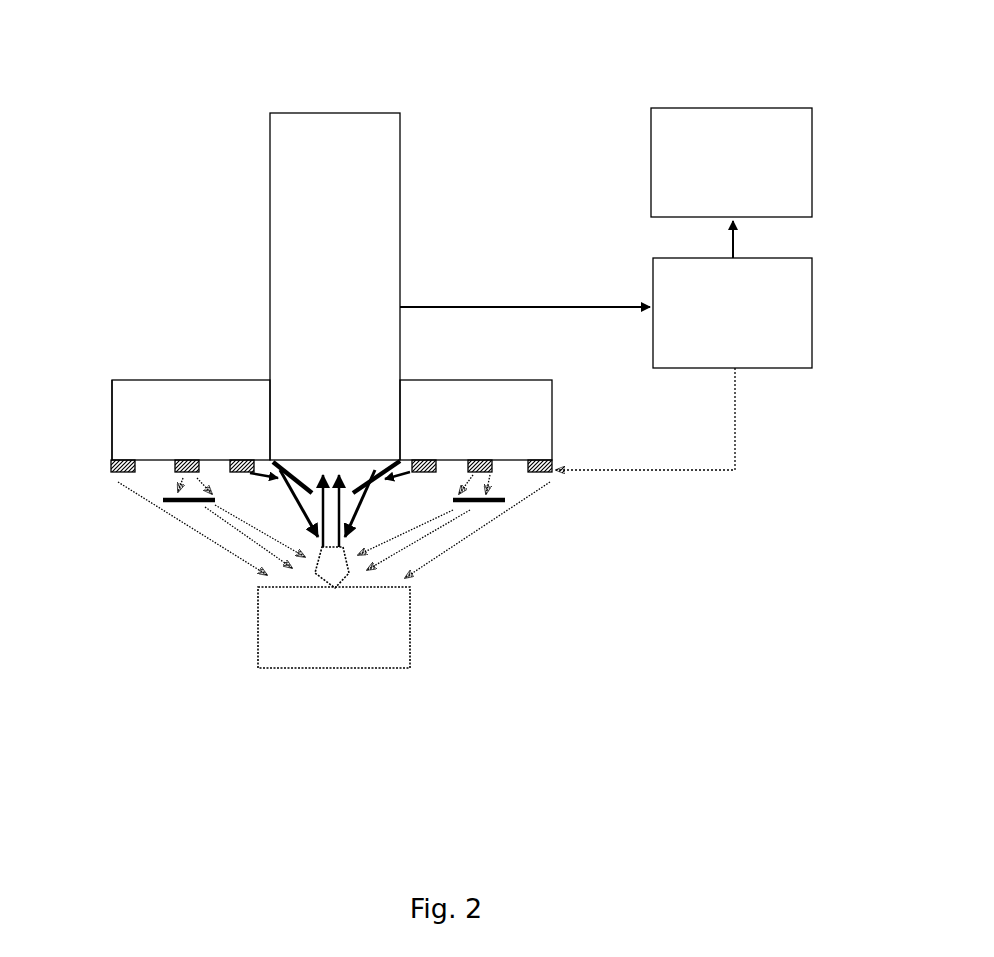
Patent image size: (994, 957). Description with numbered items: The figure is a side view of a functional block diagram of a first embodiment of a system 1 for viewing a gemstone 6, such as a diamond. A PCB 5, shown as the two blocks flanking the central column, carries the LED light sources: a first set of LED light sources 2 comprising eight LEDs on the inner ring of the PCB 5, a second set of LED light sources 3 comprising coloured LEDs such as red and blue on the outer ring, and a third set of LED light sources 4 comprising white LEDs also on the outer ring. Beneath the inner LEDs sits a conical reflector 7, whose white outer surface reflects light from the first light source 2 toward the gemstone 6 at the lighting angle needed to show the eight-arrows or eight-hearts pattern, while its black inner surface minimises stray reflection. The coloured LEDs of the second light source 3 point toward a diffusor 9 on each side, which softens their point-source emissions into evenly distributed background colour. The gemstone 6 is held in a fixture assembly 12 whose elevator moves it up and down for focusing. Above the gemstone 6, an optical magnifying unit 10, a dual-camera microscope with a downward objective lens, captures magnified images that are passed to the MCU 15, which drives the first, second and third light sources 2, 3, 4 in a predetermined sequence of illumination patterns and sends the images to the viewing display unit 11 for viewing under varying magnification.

The system 1 is at (638, 578).
The first set of LED light sources 2 is at (241, 462).
The second set of LED light sources 3 is at (185, 452).
The third set of LED light sources 4 is at (102, 472).
The PCB 5 is at (108, 405).
The gemstone 6 is at (333, 565).
The conical reflector 7 is at (300, 490).
The diffusor 9 is at (193, 507).
The optical magnifying unit 10 is at (405, 258).
The viewing display unit 11 is at (720, 108).
The fixture assembly 12 is at (337, 656).
The MCU 15 is at (815, 300).